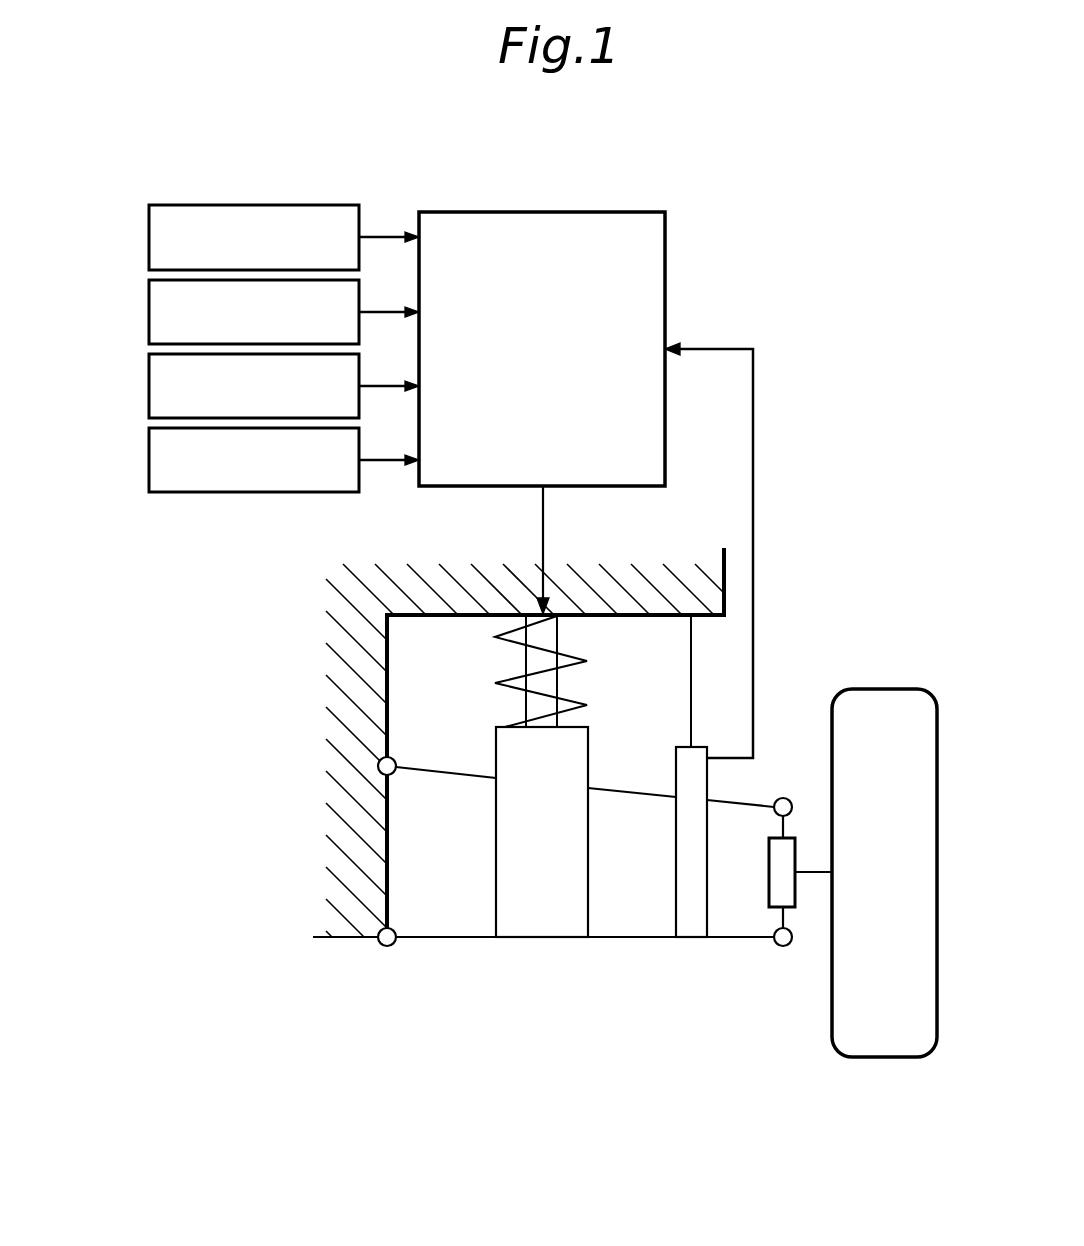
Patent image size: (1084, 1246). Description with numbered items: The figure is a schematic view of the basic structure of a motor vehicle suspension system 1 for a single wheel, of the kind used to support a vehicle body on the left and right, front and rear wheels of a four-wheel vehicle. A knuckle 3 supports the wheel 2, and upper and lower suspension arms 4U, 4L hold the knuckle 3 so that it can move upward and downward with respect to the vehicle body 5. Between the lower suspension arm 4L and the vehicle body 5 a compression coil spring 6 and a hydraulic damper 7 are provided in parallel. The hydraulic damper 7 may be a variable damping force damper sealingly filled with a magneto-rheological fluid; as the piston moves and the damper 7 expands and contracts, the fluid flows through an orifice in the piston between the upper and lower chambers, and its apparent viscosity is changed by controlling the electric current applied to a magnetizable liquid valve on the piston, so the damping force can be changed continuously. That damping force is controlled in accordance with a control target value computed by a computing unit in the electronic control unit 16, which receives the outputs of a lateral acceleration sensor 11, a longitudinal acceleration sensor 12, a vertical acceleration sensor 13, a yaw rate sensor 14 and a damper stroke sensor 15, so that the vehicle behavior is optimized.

The suspension system 1 is at (814, 532).
The wheel 2 is at (891, 1043).
The knuckle 3 is at (789, 890).
The upper suspension arm 4U is at (743, 803).
The lower suspension arm 4L is at (725, 938).
The vehicle body 5 is at (350, 920).
The compression coil spring 6 is at (586, 662).
The hydraulic damper 7 is at (575, 852).
The lateral acceleration sensor 11 is at (149, 238).
The longitudinal acceleration sensor 12 is at (149, 314).
The vertical acceleration sensor 13 is at (149, 388).
The yaw rate sensor 14 is at (149, 462).
The damper stroke sensor 15 is at (697, 874).
The electronic control unit 16 is at (584, 212).